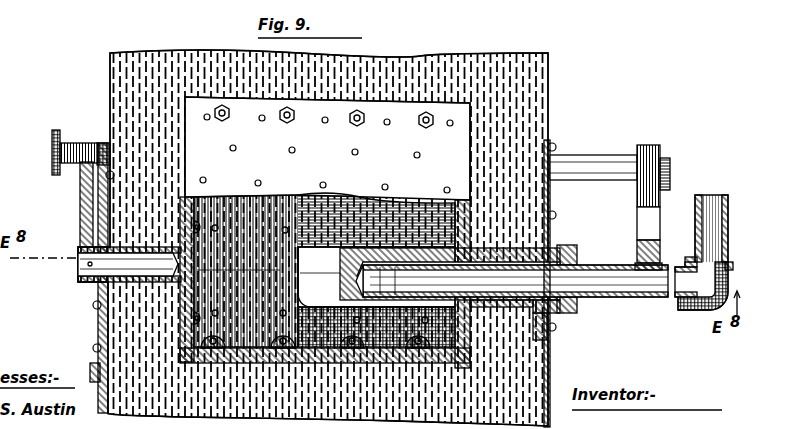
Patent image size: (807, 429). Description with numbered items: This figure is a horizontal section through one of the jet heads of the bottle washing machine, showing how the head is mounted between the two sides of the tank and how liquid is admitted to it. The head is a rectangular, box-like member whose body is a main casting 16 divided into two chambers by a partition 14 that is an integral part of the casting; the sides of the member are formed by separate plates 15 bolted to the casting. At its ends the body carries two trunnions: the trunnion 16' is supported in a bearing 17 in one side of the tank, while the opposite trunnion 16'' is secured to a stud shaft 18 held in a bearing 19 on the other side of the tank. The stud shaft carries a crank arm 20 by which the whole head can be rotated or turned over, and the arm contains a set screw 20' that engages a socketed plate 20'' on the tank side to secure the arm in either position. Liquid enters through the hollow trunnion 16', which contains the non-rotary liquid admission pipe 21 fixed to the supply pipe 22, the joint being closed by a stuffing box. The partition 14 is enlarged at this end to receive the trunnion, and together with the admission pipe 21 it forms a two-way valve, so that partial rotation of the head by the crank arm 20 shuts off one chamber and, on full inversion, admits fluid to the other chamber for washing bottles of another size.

The partition 14 is at (324, 270).
The side plates 15 is at (327, 148).
The main casting 16 is at (325, 382).
The trunnion 16' is at (518, 284).
The trunnion 16'' is at (198, 259).
The bearing 17 is at (549, 244).
The stud shaft 18 is at (105, 265).
The bearing 19 is at (97, 283).
The crank arm 20 is at (70, 204).
The set screw 20' is at (74, 140).
The socketed plate 20'' is at (80, 278).
The liquid admission pipe 21 is at (618, 285).
The supply pipe 22 is at (711, 208).